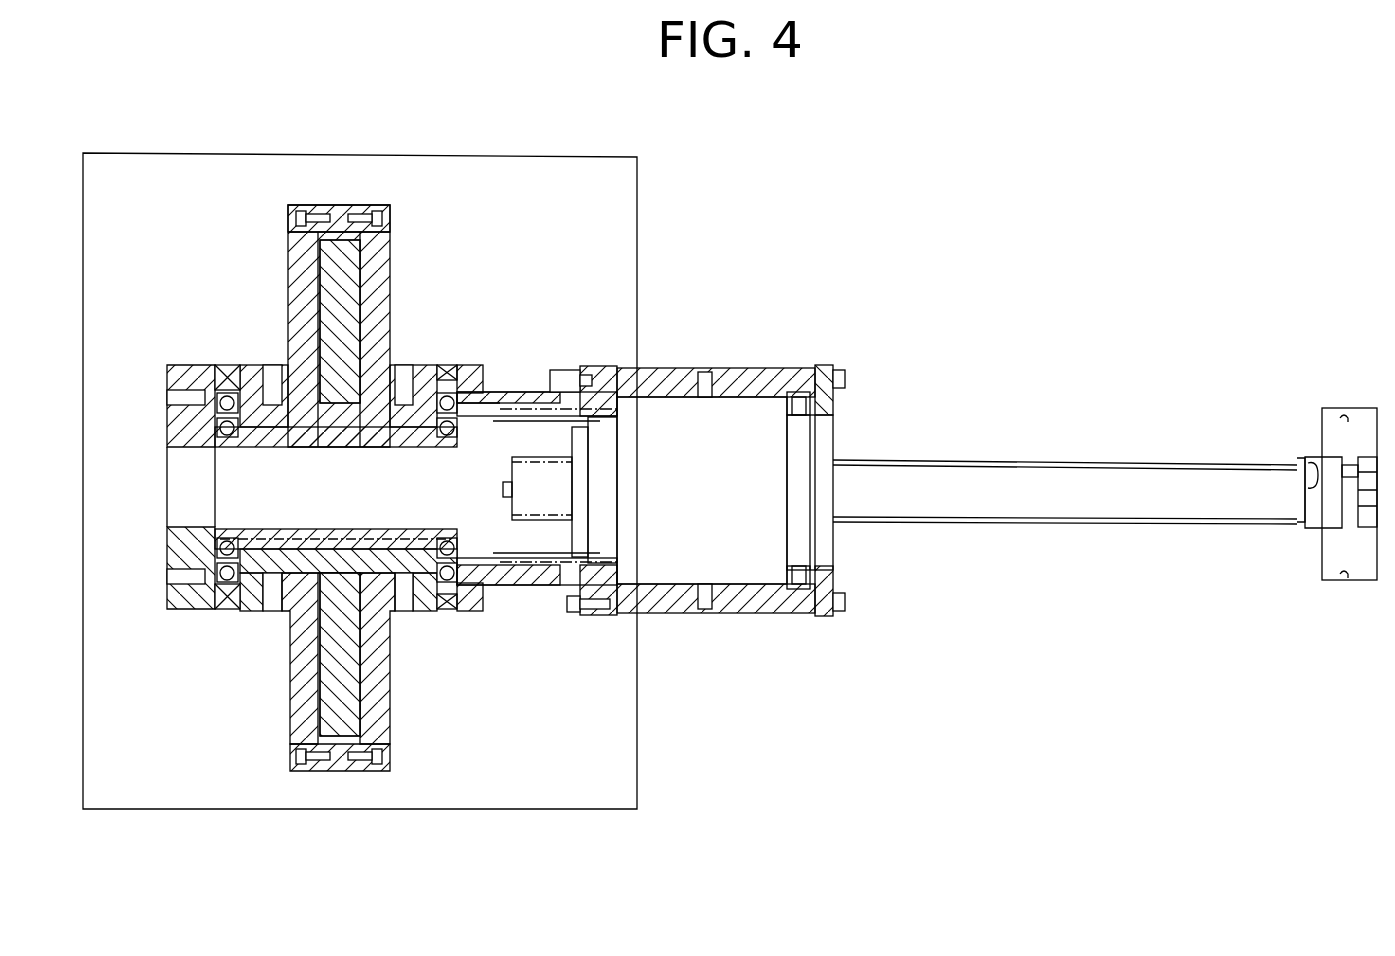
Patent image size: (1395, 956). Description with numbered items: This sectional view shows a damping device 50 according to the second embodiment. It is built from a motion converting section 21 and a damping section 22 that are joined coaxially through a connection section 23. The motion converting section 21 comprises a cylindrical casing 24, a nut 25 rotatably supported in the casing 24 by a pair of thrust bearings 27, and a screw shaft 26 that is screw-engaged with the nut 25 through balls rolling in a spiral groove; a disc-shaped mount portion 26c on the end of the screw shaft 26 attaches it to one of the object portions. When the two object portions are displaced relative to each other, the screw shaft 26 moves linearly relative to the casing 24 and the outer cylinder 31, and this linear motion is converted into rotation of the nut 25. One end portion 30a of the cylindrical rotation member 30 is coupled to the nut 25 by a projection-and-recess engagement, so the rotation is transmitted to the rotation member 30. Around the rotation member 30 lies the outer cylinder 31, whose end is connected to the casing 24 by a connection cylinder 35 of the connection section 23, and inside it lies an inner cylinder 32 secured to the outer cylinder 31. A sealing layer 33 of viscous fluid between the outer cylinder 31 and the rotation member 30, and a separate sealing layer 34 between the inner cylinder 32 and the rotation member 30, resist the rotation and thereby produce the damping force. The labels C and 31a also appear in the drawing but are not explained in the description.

The clutch unit C is at (476, 157).
The motion converting section 21 is at (725, 626).
The damping section 22 is at (404, 752).
The connection section 23 is at (522, 610).
The cylindrical casing 24 is at (670, 378).
The nut 25 is at (780, 478).
The screw shaft 26 is at (927, 480).
The mount portion 26c is at (1335, 417).
The thrust bearings 27 is at (603, 393).
The rotation member 30 is at (365, 415).
The one end portion of the rotation member 30a is at (337, 310).
The outer cylinder 31 is at (410, 400).
The hub flange 31a is at (382, 262).
The inner cylinder 32 is at (390, 400).
The sealing layer for the outer peripheral side 33 is at (297, 410).
The sealing layer for the inner peripheral side 34 is at (232, 385).
The connection cylinder 35 is at (530, 393).
The damping device 50 is at (790, 326).